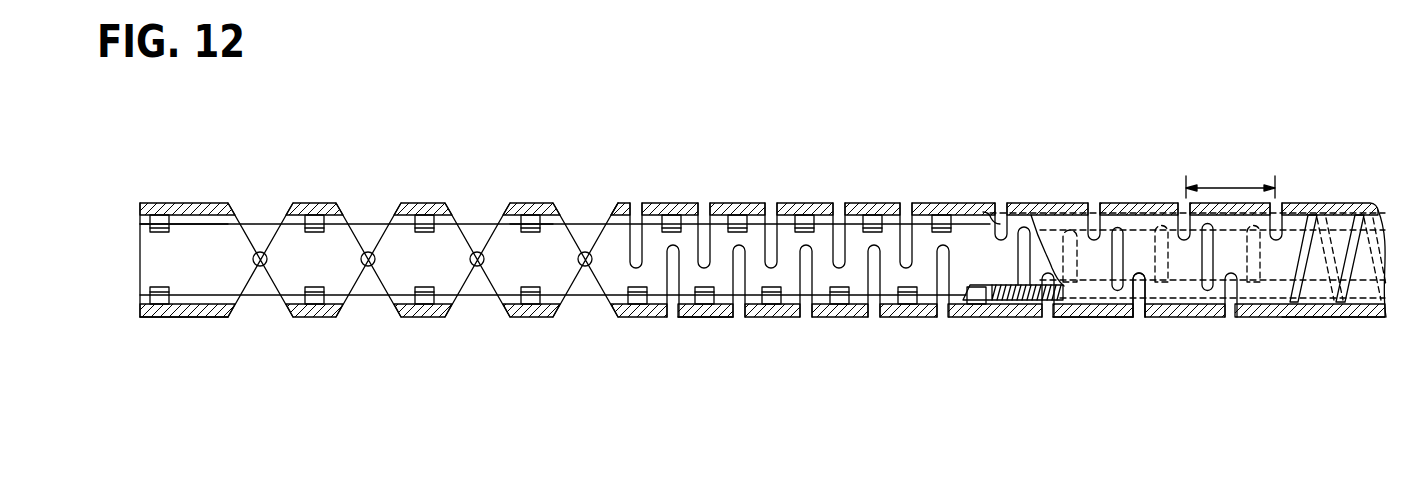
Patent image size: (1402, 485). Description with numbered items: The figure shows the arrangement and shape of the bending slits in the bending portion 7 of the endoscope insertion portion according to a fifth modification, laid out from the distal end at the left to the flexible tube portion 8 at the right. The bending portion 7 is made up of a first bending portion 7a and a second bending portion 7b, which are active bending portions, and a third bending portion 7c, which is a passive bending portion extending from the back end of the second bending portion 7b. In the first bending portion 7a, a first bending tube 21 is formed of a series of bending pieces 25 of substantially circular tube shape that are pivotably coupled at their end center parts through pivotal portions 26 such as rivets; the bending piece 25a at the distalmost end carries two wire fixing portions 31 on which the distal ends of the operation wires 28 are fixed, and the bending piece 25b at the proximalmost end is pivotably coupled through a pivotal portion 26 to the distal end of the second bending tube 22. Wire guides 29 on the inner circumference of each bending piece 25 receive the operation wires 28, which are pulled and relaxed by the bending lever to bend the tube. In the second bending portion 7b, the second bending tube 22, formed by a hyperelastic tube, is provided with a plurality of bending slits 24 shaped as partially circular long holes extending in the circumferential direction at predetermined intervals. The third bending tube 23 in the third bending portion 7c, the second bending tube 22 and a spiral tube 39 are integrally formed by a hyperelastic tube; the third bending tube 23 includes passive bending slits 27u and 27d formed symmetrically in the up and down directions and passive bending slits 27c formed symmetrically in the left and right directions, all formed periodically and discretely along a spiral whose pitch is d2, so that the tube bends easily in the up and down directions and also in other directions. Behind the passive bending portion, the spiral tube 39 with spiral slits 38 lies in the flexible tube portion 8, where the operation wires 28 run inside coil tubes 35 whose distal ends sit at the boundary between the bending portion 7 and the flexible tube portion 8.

The bending portion 7 is at (596, 109).
The first bending portion 7a is at (133, 143).
The second bending portion 7b is at (593, 140).
The third bending portion 7c is at (984, 138).
The flexible tube portion 8 is at (1351, 166).
The first bending tube 21 is at (133, 357).
The second bending tube 22 is at (593, 357).
The third bending tube 23 is at (1268, 355).
The bending slits 24 is at (636, 216).
The bending pieces 25 is at (280, 240).
The bending piece at distalmost end 25a is at (205, 240).
The bending piece at proximalmost end 25b is at (514, 243).
The pivotal portions 26 is at (257, 251).
The passive bending slits 27u is at (1090, 208).
The passive bending slits 27c is at (1116, 268).
The passive bending slits 27d is at (1139, 305).
The operation wires 28 is at (599, 214).
The wire guides 29 is at (318, 214).
The wire fixing portions 31 is at (161, 215).
The coil tubes 35 is at (1008, 201).
The spiral slits 38 is at (1288, 304).
The spiral tube 39 is at (1282, 355).
The pitch of the spiral d2 is at (1230, 181).